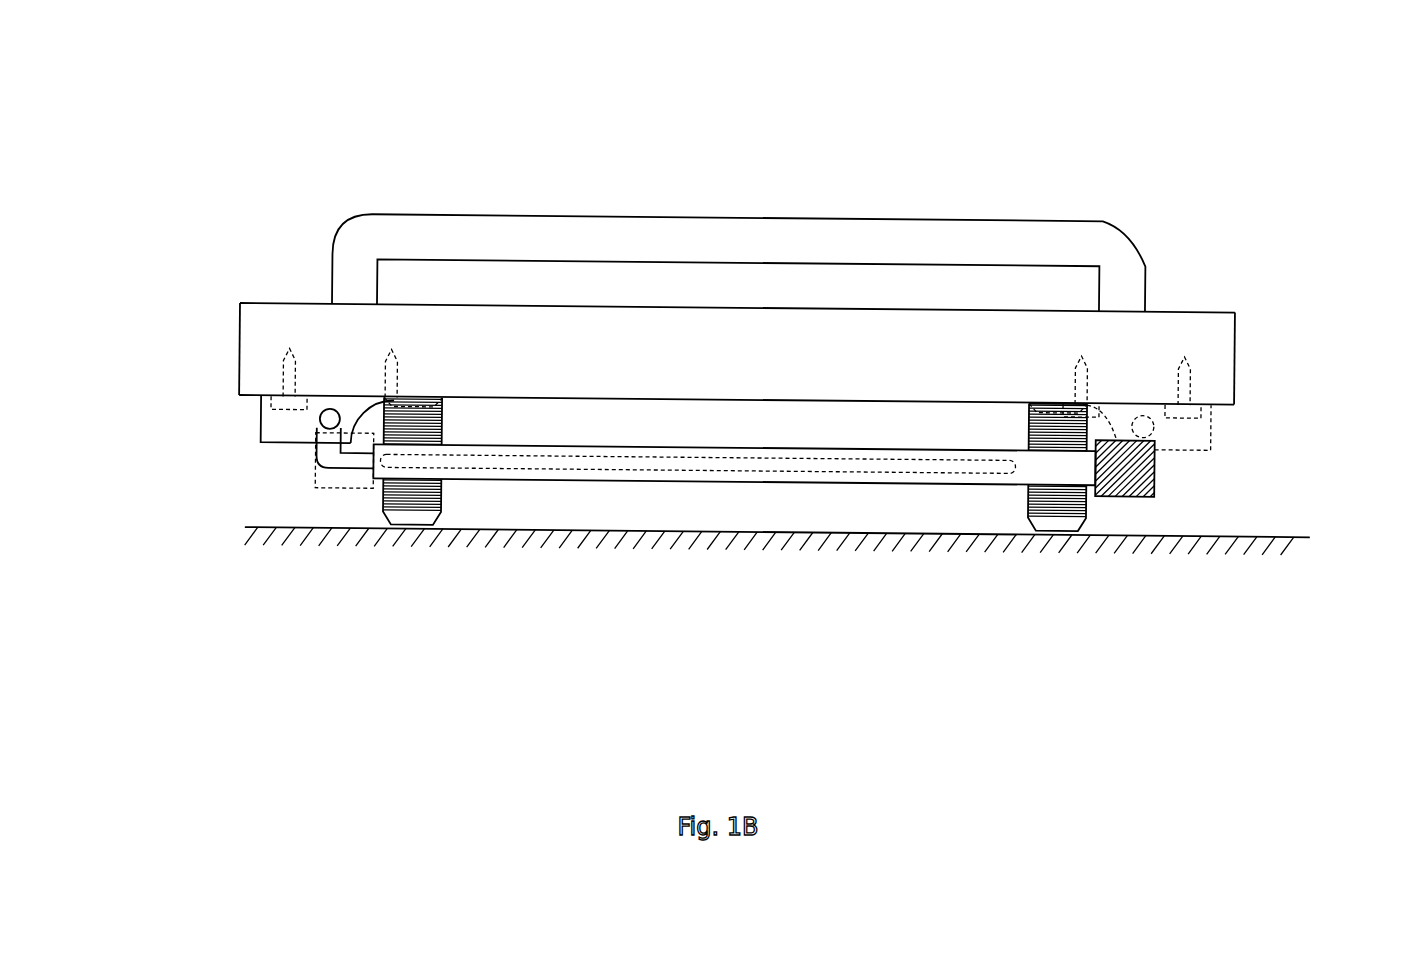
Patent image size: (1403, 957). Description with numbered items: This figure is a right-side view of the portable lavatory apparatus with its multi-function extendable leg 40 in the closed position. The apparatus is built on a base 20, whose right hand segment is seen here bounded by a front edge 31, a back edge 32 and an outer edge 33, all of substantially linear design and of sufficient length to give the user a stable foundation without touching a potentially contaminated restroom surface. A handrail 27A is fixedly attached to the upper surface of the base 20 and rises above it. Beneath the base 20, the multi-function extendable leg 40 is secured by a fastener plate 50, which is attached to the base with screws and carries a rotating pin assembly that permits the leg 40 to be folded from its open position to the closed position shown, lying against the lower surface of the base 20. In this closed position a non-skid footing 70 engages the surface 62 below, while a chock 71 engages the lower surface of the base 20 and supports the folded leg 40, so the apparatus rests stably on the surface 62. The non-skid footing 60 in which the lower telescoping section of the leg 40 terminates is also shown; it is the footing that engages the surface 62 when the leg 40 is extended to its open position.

The base 20 is at (278, 273).
The handrail 27A is at (1002, 220).
The outer edge 33 is at (1208, 335).
The front edge 31 is at (1243, 343).
The back edge 32 is at (230, 332).
The fastener plate 50 is at (292, 432).
The multi-function extendable leg 40 is at (655, 507).
The non-skid footing 70 is at (1032, 500).
The chock 71 is at (1040, 432).
The non-skid footing 60 is at (1138, 502).
The surface 62 is at (1277, 538).